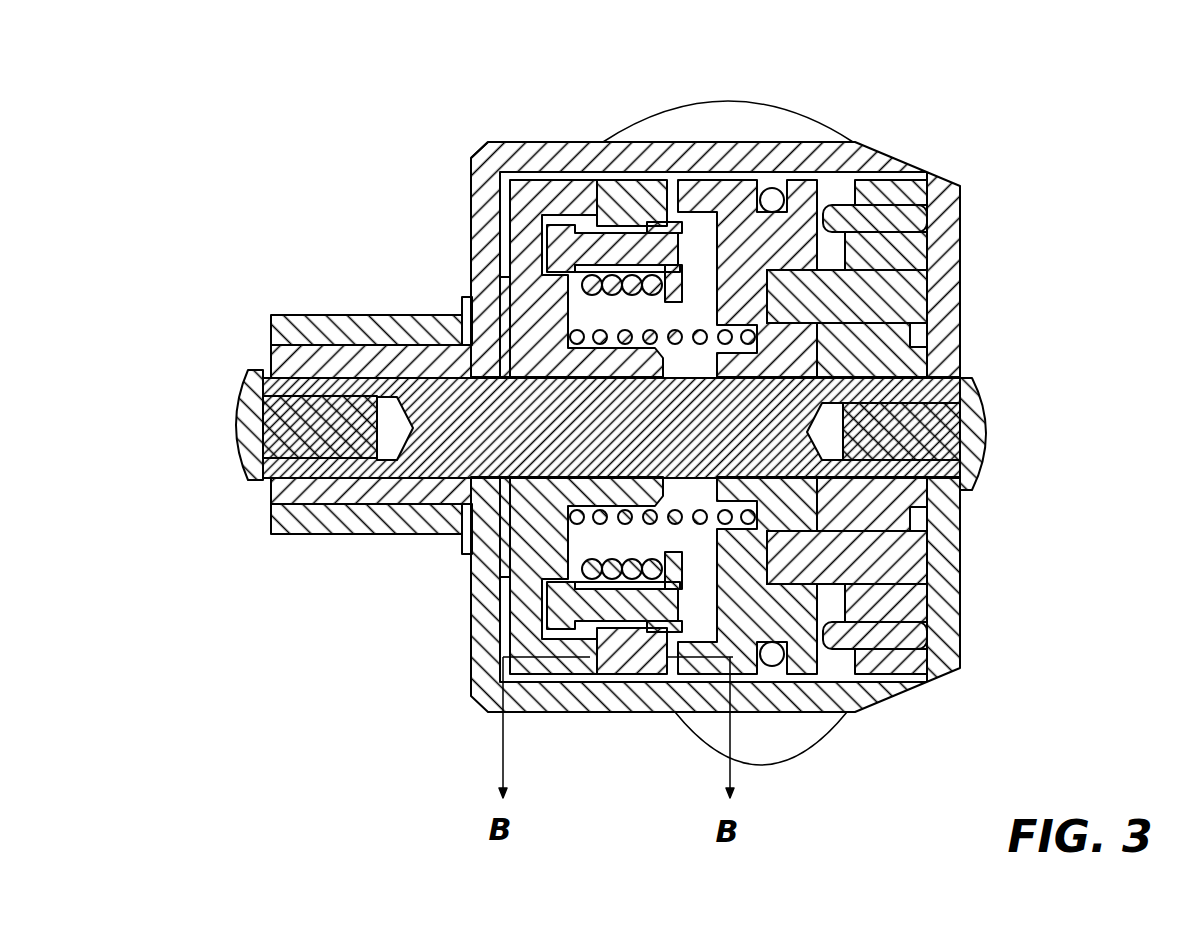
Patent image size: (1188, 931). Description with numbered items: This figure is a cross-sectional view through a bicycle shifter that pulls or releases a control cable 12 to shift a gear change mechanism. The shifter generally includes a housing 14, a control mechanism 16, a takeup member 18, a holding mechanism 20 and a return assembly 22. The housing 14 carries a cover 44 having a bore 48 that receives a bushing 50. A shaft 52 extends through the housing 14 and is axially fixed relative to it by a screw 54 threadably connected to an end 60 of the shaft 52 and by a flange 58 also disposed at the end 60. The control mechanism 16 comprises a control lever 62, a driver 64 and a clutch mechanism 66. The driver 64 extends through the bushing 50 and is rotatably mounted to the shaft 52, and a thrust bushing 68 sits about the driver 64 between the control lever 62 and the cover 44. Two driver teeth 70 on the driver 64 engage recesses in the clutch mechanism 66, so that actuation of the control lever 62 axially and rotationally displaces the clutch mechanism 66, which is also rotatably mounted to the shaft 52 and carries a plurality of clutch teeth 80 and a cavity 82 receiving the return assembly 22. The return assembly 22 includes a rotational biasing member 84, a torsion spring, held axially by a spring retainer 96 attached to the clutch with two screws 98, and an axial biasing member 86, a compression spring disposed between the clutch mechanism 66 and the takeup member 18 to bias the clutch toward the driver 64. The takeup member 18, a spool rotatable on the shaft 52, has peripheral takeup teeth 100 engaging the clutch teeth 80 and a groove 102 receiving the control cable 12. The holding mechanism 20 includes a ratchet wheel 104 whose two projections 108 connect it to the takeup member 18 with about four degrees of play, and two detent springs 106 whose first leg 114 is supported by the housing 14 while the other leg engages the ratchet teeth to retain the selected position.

The control cable 12 is at (797, 763).
The housing 14 is at (932, 162).
The control mechanism 16 is at (252, 266).
The takeup member 18 is at (813, 168).
The holding mechanism 20 is at (918, 345).
The return assembly 22 is at (590, 552).
The cover 44 is at (480, 158).
The bore 48 is at (488, 315).
The bushing 50 is at (467, 548).
The shaft 52 is at (412, 388).
The screw 54 is at (994, 428).
The flange 58 is at (933, 363).
The end of the shaft 60 is at (950, 470).
The control lever 62 is at (358, 536).
The driver 64 is at (507, 170).
The clutch mechanism 66 is at (635, 166).
The thrust bushing 68 is at (460, 300).
The driver teeth 70 is at (590, 181).
The clutch teeth 80 is at (657, 182).
The cavity 82 is at (502, 180).
The rotational biasing member 84 is at (590, 275).
The axial biasing member 86 is at (567, 275).
The spring retainer 96 is at (690, 182).
The screws 98 is at (555, 227).
The takeup teeth 100 is at (712, 185).
The groove 102 is at (775, 666).
The ratchet wheel 104 is at (905, 573).
The detent springs 106 is at (856, 178).
The projections 108 is at (770, 293).
The first leg 114 is at (933, 210).